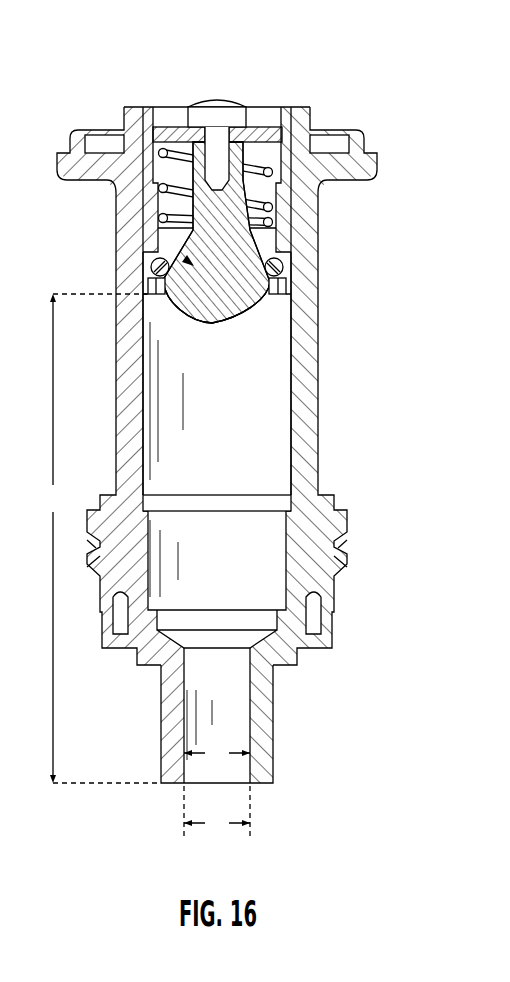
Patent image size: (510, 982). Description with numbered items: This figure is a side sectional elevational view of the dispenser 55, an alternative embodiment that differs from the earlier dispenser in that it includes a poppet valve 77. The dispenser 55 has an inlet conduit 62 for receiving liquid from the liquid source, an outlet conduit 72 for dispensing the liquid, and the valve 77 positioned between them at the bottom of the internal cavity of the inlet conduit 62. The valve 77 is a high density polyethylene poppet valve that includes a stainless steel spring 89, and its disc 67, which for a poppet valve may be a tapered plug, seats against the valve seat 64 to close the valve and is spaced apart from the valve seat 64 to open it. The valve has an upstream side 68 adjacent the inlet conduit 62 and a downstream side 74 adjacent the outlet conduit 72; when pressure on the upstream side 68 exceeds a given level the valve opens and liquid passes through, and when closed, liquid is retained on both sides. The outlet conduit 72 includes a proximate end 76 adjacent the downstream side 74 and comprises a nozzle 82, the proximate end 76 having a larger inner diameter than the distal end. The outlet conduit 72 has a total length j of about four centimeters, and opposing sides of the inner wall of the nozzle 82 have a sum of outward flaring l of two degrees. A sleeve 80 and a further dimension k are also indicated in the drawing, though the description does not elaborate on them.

The dispenser 55 is at (313, 72).
The inlet conduit 62 is at (262, 115).
The valve seat 64 is at (160, 292).
The disc 67 is at (208, 310).
The upstream side 68 is at (174, 127).
The outlet conduit 72 is at (265, 415).
The downstream side 74 is at (263, 308).
The proximate end 76 is at (295, 302).
The poppet valve 77 is at (186, 260).
The sleeve 80 is at (275, 452).
The nozzle 82 is at (263, 710).
The spring 89 is at (260, 165).
The total length j is at (104, 538).
The width dimension k is at (217, 812).
The sum of outward flaring l is at (217, 754).